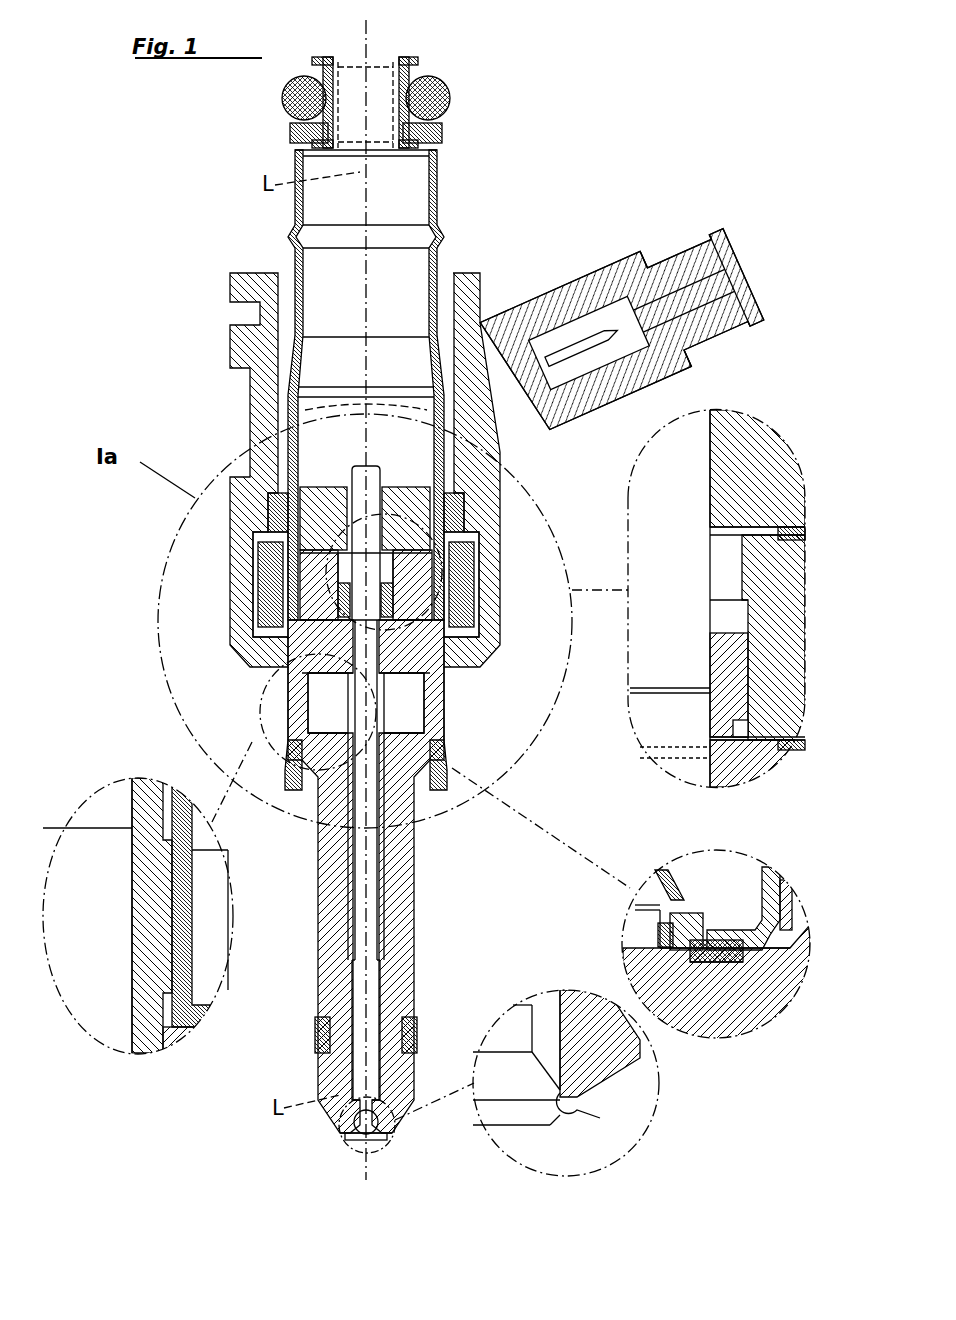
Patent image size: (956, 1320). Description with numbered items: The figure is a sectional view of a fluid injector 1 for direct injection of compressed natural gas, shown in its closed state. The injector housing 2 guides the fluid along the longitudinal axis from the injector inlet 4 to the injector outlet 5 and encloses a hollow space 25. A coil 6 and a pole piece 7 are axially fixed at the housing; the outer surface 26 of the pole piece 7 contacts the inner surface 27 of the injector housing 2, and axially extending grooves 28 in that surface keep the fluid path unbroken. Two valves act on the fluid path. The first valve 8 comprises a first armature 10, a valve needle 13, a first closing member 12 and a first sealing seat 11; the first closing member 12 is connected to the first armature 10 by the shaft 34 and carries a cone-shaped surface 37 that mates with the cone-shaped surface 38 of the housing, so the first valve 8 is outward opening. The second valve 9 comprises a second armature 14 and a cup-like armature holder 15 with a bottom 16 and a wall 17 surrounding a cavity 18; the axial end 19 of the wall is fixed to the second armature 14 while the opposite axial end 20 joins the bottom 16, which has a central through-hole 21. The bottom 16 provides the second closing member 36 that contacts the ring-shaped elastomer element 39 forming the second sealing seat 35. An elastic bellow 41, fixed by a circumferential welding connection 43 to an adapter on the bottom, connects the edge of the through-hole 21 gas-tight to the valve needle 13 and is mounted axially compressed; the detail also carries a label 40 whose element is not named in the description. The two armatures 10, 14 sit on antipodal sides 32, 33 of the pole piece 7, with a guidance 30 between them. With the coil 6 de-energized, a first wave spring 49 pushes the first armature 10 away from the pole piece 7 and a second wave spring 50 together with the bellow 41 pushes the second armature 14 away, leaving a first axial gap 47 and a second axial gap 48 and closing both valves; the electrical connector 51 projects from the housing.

The fluid injector 1 is at (210, 152).
The injector housing 2 is at (264, 388).
The injector inlet 4 is at (413, 62).
The injector outlet 5 is at (335, 1120).
The coil 6 is at (432, 580).
The pole piece 7 is at (320, 560).
The first valve 8 is at (493, 777).
The second valve 9 is at (328, 777).
The first armature 10 is at (300, 497).
The first sealing seat 11 is at (534, 1135).
The first closing member 12 is at (350, 1135).
The valve needle 13 is at (368, 870).
The second armature 14 is at (262, 660).
The armature holder 15 is at (425, 680).
The bottom 16 is at (395, 745).
The wall 17 is at (428, 712).
The cavity 18 is at (305, 692).
The axial end 19 is at (412, 650).
The opposite axial end 20 is at (415, 735).
The central through-hole 21 is at (385, 760).
The hollow space 25 is at (418, 182).
The outer surface 26 is at (455, 555).
The inner surface 27 is at (440, 590).
The axially extending grooves 28 is at (258, 572).
The guidance 30 is at (268, 625).
The antipodal side 32 is at (714, 520).
The antipodal side 33 is at (712, 740).
The shaft 34 is at (368, 940).
The second sealing seat 35 is at (544, 936).
The second closing member 36 is at (700, 935).
The cone-shaped surface 37 is at (385, 1098).
The cone-shaped surface 38 is at (580, 1112).
The ring-shaped elastomer element 39 is at (725, 955).
The shoulder 40 is at (693, 955).
The elastic bellow 41 is at (327, 700).
The circumferential welding connection 43 is at (668, 938).
The first axial gap 47 is at (722, 497).
The second axial gap 48 is at (682, 741).
The first wave spring 49 is at (780, 535).
The second wave spring 50 is at (790, 752).
The electrical connector 51 is at (585, 300).